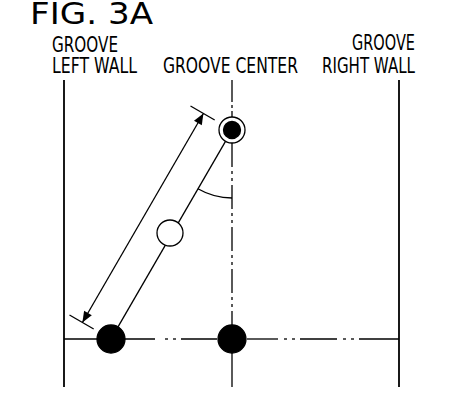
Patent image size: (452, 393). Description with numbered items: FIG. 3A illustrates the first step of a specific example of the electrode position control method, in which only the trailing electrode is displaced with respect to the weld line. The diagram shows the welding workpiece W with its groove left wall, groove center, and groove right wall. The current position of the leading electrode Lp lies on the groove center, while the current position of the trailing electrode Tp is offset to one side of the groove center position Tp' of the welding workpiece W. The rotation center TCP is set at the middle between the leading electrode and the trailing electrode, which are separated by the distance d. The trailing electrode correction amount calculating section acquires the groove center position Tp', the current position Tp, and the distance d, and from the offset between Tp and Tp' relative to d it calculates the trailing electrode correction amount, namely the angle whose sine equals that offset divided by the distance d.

The welding workpiece W is at (61, 196).
The current position of the leading electrode Lp is at (248, 138).
The rotation center TCP is at (193, 243).
The current position of the trailing electrode Tp is at (148, 357).
The groove center position Tp' is at (271, 357).
The distance between the leading electrode and the trailing electrode d is at (142, 217).